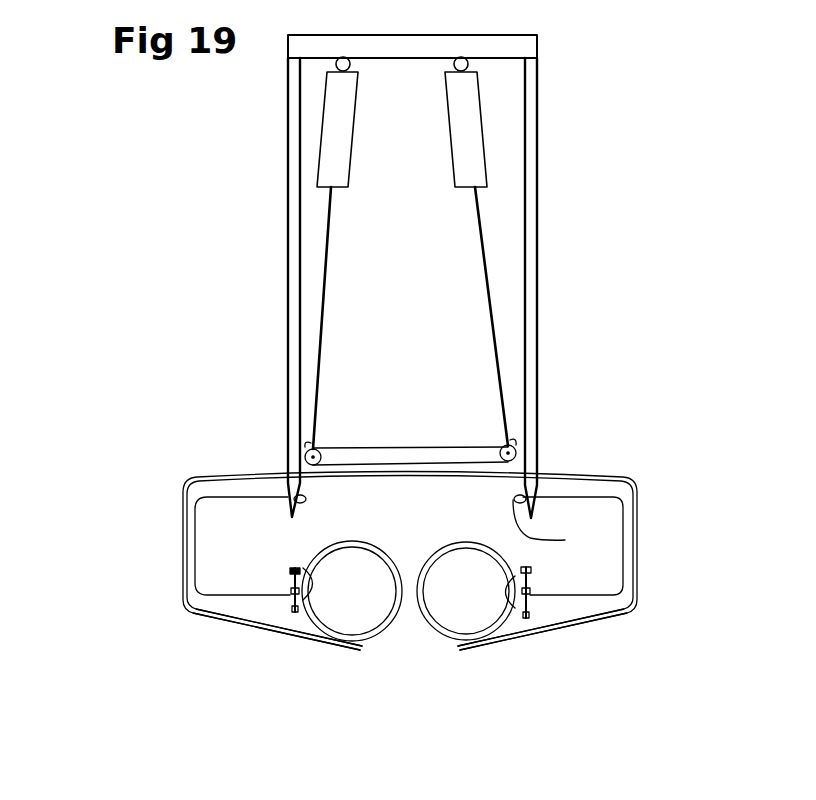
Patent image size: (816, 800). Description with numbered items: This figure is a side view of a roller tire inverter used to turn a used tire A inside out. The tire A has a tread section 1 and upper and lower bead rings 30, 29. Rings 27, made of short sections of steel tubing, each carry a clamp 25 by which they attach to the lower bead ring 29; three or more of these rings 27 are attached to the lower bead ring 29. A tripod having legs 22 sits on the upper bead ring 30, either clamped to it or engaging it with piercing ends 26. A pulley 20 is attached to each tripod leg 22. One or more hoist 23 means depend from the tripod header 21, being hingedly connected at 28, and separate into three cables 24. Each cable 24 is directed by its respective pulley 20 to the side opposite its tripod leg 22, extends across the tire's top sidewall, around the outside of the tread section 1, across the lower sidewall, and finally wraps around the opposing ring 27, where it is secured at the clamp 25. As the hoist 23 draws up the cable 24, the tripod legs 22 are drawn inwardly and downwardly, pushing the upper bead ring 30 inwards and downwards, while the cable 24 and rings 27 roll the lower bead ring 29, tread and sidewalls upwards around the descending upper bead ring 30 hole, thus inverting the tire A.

The tread section 1 is at (631, 483).
The pulley 20 is at (408, 448).
The tripod header 21 is at (540, 36).
The tripod leg 22 is at (287, 228).
The hoist 23 is at (330, 143).
The cable 24 is at (327, 273).
The clamp 25 is at (530, 578).
The piercing ends 26 is at (304, 505).
The ring 27 is at (443, 637).
The hinged connection 28 is at (528, 47).
The lower bead ring 29 is at (290, 590).
The upper bead ring 30 is at (565, 540).
The used tire A is at (200, 532).